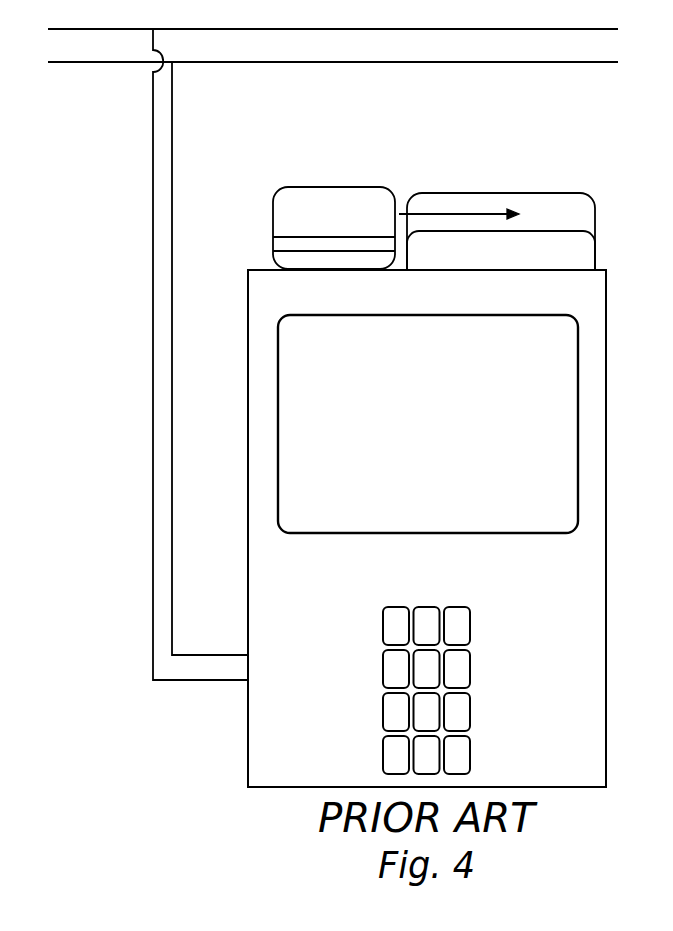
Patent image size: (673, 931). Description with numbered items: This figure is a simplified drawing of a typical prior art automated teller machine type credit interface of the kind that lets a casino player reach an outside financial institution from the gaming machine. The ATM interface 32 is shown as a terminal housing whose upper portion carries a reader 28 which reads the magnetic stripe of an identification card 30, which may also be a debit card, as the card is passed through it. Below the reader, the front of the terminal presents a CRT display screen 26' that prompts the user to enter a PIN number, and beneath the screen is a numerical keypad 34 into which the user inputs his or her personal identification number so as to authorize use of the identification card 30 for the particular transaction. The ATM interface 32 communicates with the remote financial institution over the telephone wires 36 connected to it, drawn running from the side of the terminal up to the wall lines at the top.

The CRT display screen 26' is at (468, 424).
The reader 28 is at (577, 265).
The identification card 30 is at (372, 203).
The ATM interface 32 is at (248, 727).
The numerical keypad 34 is at (497, 632).
The telephone wires 36 is at (173, 320).